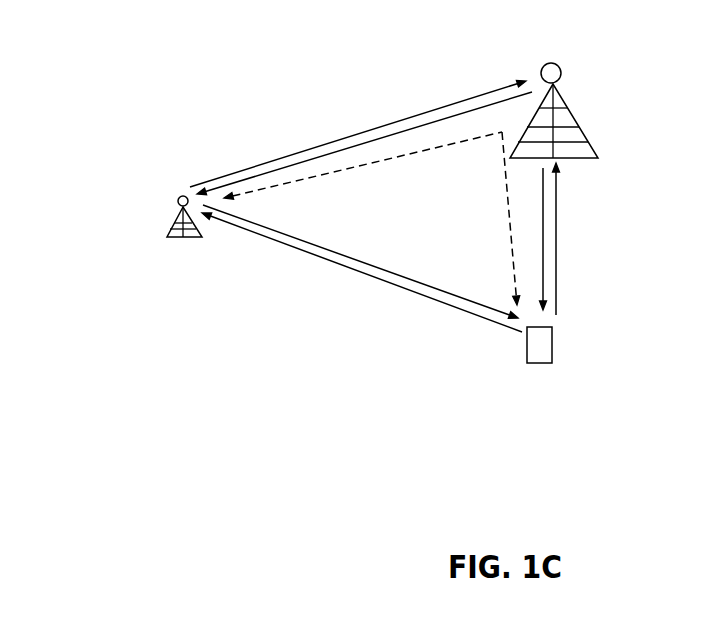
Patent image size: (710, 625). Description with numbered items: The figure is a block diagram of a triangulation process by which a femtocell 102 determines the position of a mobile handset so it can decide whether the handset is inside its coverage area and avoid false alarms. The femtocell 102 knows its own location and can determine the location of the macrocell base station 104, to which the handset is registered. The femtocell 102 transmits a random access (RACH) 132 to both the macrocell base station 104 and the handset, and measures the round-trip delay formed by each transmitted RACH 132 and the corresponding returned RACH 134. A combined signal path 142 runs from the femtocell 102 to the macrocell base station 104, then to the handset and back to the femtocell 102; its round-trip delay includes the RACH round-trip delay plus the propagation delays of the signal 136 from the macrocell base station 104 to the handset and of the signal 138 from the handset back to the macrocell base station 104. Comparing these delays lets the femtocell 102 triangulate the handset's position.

The femtocell 102 is at (158, 230).
The macrocell base station 104 is at (572, 65).
The transmitted random access (RACH) 132 is at (340, 135).
The returned RACH 134 is at (387, 143).
The signal from macrocell base station to UE 136 is at (541, 272).
The signal from UE back to macrocell base station 138 is at (558, 247).
The combined signal path 142 is at (448, 145).